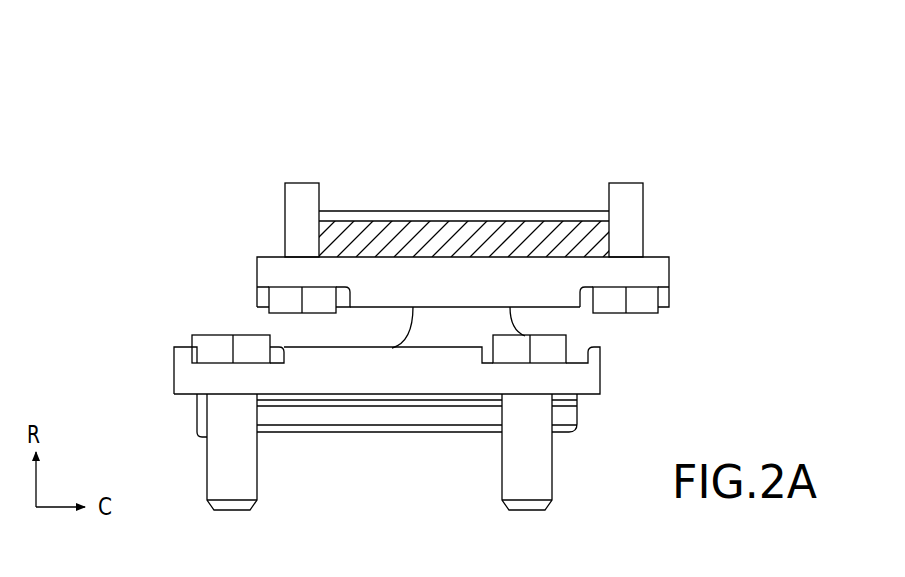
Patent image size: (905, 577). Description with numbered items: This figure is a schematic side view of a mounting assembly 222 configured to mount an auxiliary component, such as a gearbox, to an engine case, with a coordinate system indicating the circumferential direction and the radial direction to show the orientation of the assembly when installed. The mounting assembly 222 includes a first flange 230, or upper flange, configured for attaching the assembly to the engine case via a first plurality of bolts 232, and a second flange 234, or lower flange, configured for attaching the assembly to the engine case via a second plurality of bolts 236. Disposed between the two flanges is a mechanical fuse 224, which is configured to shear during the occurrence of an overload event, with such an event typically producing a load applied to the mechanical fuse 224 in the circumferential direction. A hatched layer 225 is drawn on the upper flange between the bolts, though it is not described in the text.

The mounting assembly 222 is at (183, 163).
The mechanical fuse 224 is at (540, 323).
The test specimen layer 225 is at (349, 227).
The first flange 230 is at (660, 268).
The first plurality of bolts 232 is at (290, 218).
The second flange 234 is at (185, 372).
The second plurality of bolts 236 is at (212, 465).